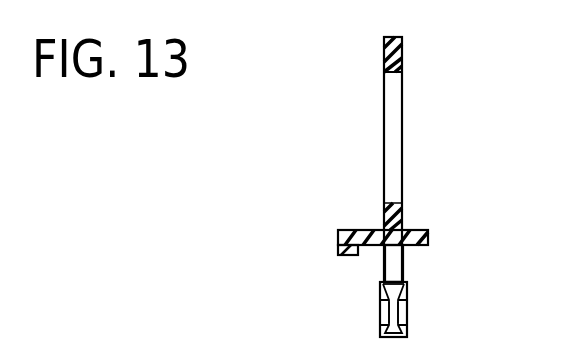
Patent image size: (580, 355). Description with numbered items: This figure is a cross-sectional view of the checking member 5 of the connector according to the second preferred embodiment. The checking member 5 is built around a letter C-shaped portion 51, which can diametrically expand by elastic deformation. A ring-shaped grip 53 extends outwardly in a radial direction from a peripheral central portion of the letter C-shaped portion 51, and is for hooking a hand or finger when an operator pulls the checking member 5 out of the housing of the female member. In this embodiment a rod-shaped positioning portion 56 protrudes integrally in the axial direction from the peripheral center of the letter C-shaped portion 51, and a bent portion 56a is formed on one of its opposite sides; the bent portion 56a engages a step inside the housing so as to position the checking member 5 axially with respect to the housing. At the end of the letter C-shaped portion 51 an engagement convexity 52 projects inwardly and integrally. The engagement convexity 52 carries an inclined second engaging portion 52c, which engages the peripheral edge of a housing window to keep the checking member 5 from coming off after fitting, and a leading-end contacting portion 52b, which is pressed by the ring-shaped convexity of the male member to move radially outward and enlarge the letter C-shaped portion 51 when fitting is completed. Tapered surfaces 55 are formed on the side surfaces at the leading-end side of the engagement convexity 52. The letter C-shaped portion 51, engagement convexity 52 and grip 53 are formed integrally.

The checking member 5 is at (413, 72).
The ring-shaped grip 53 is at (403, 92).
The positioning portion 56 is at (365, 230).
The bent portion 56a is at (340, 245).
The letter C-shaped portion 51 is at (404, 257).
The engagement convexity 52 is at (407, 305).
The inclined second engaging portion 52c is at (381, 300).
The leading-end contacting portion 52b is at (380, 322).
The tapered surface 55 is at (380, 306).